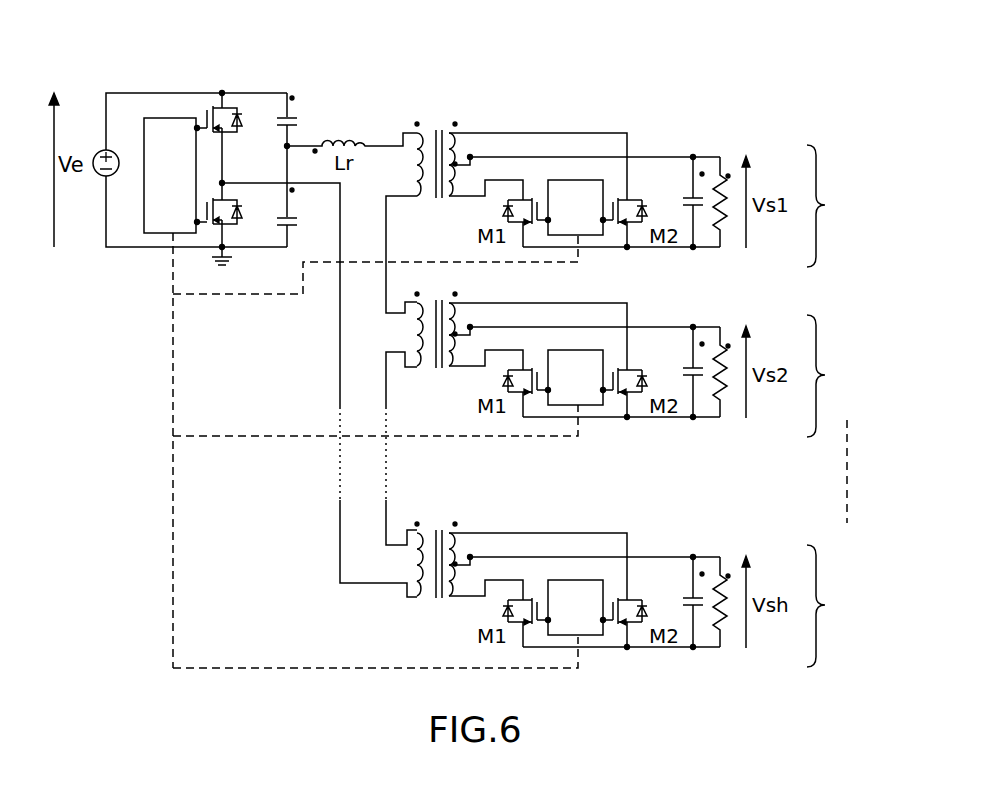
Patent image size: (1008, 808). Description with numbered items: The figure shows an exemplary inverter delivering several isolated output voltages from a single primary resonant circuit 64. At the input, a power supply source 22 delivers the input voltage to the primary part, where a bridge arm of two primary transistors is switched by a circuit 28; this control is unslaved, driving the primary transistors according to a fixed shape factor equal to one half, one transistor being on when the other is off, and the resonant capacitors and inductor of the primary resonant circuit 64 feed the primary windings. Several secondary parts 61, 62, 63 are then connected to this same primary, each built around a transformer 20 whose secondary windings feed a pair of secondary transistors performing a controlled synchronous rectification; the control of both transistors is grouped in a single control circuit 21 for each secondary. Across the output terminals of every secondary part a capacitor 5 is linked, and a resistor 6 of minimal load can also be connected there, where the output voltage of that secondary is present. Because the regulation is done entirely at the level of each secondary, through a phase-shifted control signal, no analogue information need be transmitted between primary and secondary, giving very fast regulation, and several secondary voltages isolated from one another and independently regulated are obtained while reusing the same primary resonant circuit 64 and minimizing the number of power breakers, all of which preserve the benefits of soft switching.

The capacitor 5 is at (683, 198).
The resistor 6 is at (727, 222).
The transformer 20 is at (437, 200).
The control circuit 21 is at (585, 235).
The power supply source 22 is at (96, 176).
The circuit 28 is at (157, 235).
The secondary part 61 is at (832, 206).
The secondary part 62 is at (832, 376).
The secondary part 63 is at (832, 606).
The primary resonant circuit 64 is at (415, 67).